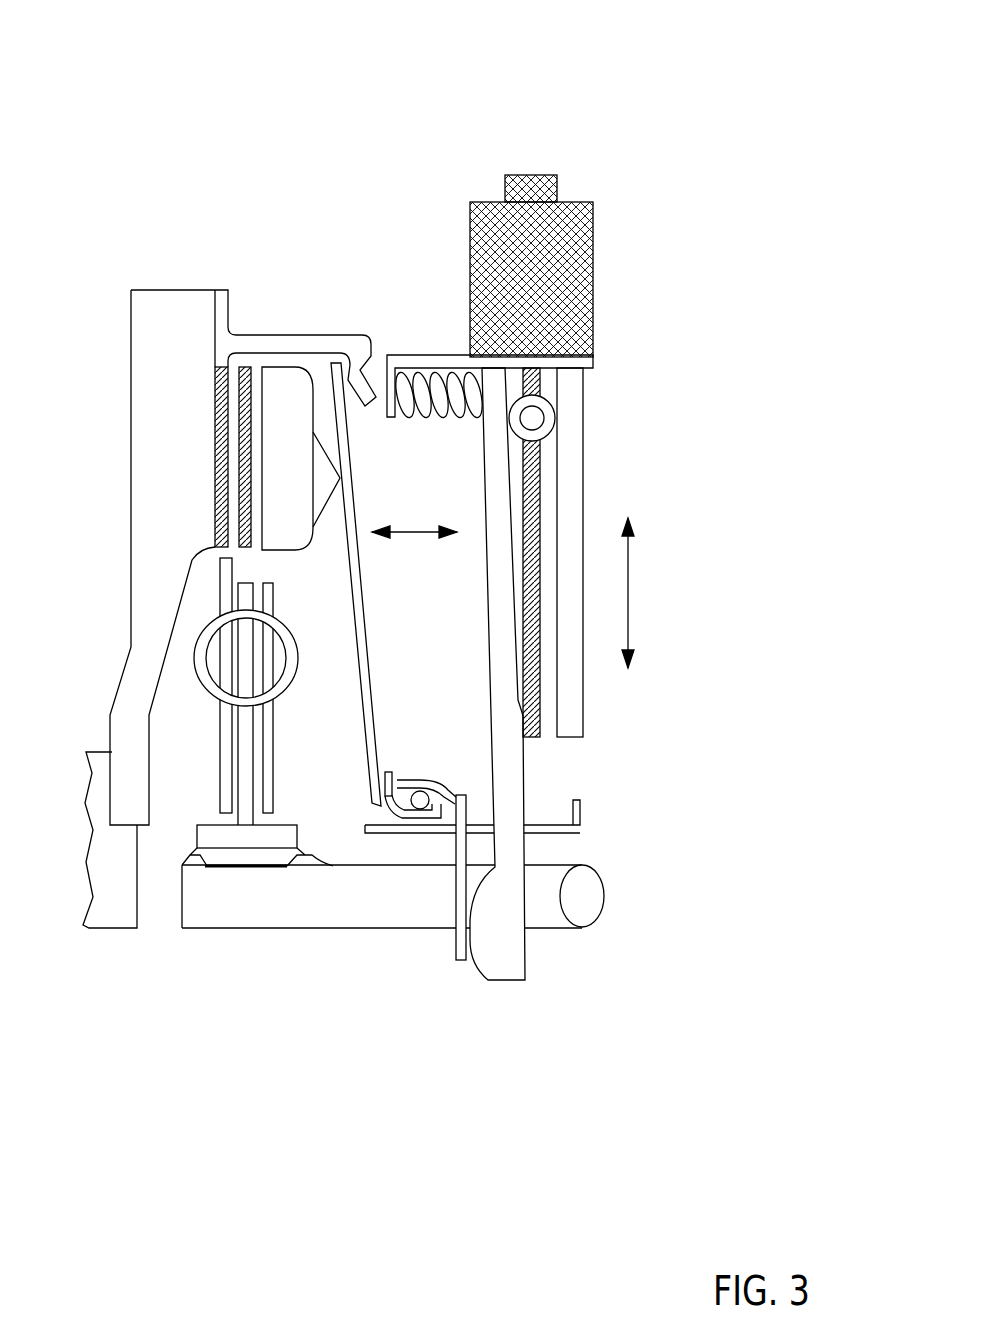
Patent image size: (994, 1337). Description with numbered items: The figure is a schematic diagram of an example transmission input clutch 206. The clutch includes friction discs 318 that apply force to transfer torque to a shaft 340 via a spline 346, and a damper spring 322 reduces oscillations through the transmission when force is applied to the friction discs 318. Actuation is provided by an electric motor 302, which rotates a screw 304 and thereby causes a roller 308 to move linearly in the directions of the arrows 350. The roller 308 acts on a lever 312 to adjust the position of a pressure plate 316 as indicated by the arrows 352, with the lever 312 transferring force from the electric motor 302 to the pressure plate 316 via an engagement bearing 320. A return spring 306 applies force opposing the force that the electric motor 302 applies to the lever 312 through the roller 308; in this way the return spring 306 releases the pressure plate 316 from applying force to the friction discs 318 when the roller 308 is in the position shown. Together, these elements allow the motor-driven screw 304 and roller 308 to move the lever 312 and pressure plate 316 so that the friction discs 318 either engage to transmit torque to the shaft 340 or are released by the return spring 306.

The transmission input clutch 206 is at (617, 33).
The electric motor 302 is at (595, 267).
The screw 304 is at (532, 738).
The return spring 306 is at (438, 420).
The roller 308 is at (552, 423).
The lever 312 is at (503, 982).
The pressure plate 316 is at (307, 446).
The friction discs 318 is at (218, 440).
The engagement bearing 320 is at (420, 792).
The damper spring 322 is at (292, 680).
The shaft 340 is at (212, 930).
The spline 346 is at (298, 825).
The arrows indicating roller movement directions 350 is at (632, 568).
The arrows indicating pressure plate movement 352 is at (422, 532).